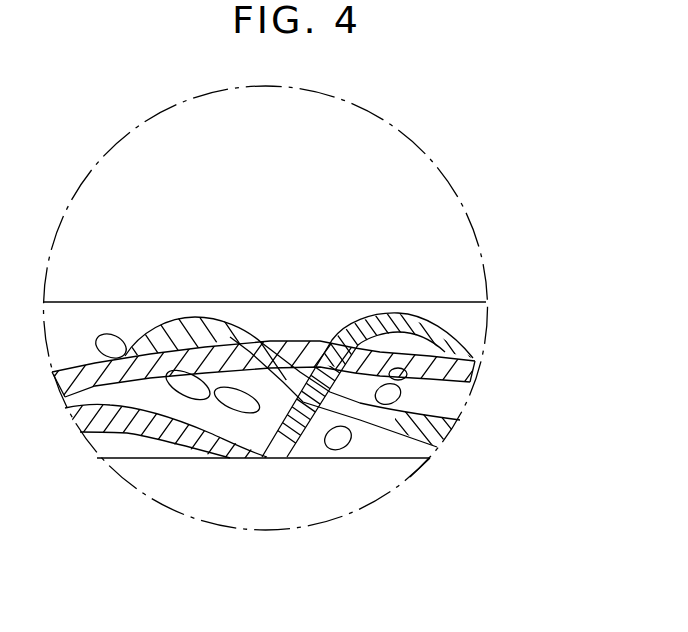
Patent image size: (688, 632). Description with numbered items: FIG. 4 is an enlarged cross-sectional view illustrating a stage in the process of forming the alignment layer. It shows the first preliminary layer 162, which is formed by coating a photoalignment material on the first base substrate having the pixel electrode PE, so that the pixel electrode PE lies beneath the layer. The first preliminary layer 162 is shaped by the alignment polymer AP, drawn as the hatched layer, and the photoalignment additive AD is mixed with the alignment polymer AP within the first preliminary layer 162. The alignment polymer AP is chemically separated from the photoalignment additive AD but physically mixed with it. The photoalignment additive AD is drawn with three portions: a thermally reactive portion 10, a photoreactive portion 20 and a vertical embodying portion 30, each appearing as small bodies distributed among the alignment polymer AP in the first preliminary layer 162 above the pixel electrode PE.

The thermally reactive portion 10 is at (108, 340).
The photoreactive portion 20 is at (190, 377).
The vertical embodying portion 30 is at (237, 398).
The first preliminary layer 162 is at (450, 400).
The photoalignment additive AD is at (257, 235).
The alignment polymer AP is at (467, 371).
The pixel electrode PE is at (400, 480).